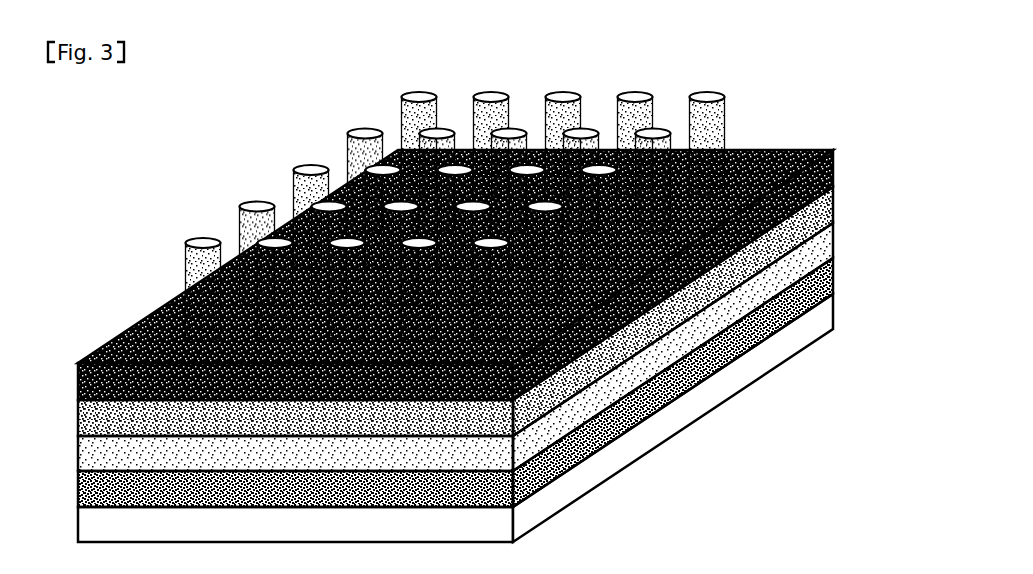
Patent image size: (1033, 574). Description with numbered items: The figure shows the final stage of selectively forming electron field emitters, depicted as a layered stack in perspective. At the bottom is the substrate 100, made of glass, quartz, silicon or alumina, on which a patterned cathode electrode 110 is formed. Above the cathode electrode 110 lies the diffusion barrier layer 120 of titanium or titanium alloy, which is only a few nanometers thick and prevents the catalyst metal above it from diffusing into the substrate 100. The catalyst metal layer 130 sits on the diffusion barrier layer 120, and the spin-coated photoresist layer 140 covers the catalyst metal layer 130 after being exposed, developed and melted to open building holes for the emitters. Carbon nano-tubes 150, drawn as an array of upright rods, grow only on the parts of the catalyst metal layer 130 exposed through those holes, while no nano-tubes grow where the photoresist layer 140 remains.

The substrate 100 is at (592, 477).
The cathode electrode 110 is at (604, 423).
The diffusion barrier layer 120 is at (620, 381).
The catalyst metal layer 130 is at (652, 334).
The photoresist layer 140 is at (792, 318).
The carbon nano-tubes 150 is at (246, 212).